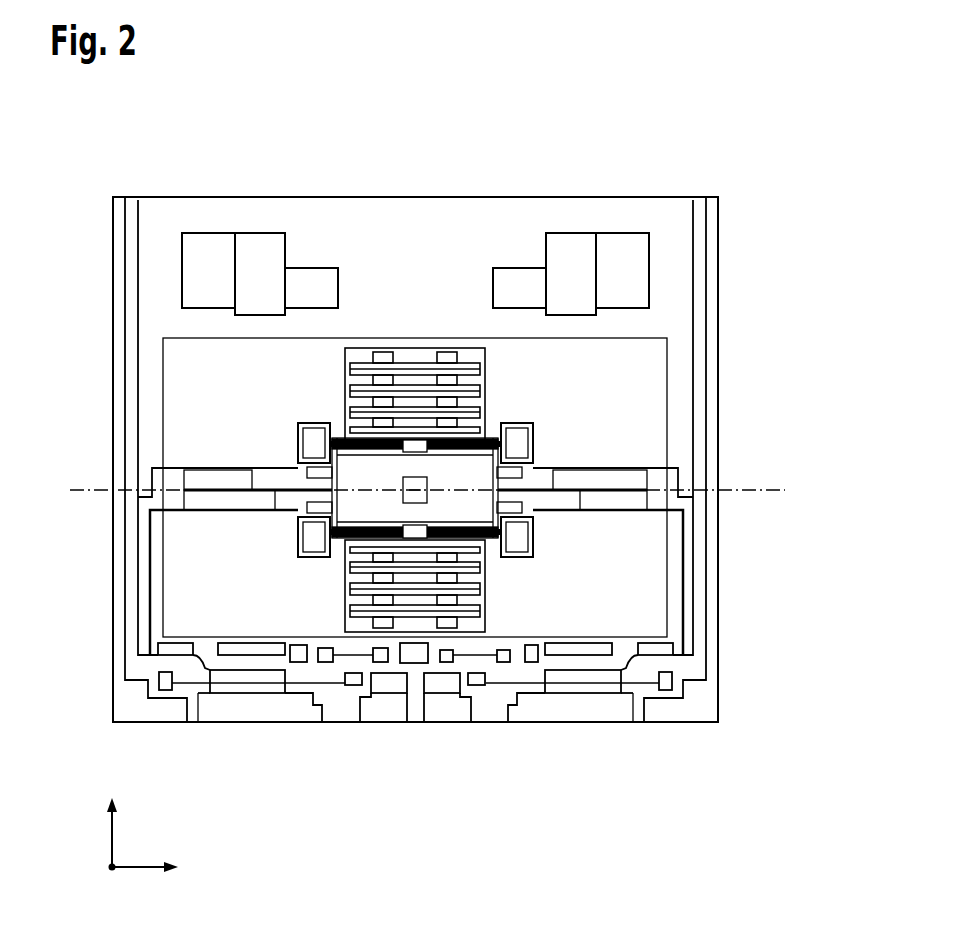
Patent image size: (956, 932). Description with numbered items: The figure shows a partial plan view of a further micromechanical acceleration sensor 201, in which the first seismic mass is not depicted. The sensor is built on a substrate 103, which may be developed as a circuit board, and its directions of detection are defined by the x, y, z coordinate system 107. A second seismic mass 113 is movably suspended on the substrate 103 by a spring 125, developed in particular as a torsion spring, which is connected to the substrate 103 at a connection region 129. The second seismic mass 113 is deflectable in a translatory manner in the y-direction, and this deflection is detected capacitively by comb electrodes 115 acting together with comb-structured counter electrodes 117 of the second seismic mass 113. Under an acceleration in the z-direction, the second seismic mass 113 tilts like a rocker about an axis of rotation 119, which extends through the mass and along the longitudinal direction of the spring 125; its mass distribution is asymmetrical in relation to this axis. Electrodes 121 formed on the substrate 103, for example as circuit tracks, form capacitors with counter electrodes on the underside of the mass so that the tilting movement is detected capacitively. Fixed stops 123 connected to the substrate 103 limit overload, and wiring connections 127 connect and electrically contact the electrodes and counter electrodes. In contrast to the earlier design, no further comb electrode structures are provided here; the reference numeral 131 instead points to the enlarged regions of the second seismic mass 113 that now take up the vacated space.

The substrate 103 is at (710, 651).
The x, y, z coordinate system 107 is at (157, 806).
The second seismic mass 113 is at (557, 568).
The comb electrodes 115 is at (469, 388).
The counter electrodes 117 is at (405, 390).
The axis of rotation 119 is at (748, 488).
The electrodes 121 is at (463, 473).
The fixed stops 123 is at (252, 258).
The spring 125 is at (288, 482).
The wiring connections 127 is at (445, 656).
The connection region 129 is at (298, 540).
The enlarged regions of second seismic mass 131 is at (620, 387).
The micromechanical acceleration sensor 201 is at (98, 660).